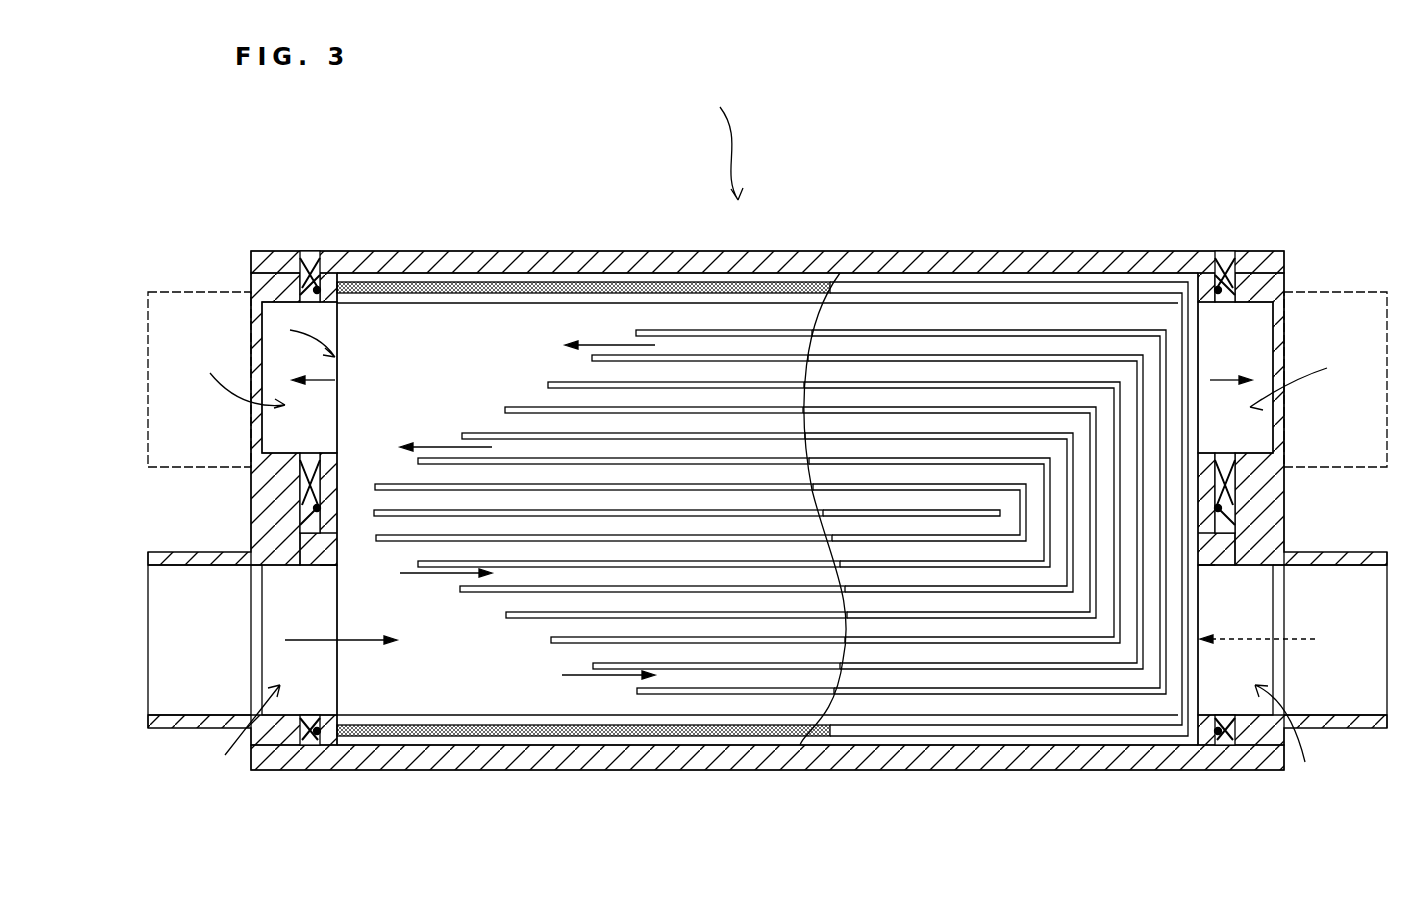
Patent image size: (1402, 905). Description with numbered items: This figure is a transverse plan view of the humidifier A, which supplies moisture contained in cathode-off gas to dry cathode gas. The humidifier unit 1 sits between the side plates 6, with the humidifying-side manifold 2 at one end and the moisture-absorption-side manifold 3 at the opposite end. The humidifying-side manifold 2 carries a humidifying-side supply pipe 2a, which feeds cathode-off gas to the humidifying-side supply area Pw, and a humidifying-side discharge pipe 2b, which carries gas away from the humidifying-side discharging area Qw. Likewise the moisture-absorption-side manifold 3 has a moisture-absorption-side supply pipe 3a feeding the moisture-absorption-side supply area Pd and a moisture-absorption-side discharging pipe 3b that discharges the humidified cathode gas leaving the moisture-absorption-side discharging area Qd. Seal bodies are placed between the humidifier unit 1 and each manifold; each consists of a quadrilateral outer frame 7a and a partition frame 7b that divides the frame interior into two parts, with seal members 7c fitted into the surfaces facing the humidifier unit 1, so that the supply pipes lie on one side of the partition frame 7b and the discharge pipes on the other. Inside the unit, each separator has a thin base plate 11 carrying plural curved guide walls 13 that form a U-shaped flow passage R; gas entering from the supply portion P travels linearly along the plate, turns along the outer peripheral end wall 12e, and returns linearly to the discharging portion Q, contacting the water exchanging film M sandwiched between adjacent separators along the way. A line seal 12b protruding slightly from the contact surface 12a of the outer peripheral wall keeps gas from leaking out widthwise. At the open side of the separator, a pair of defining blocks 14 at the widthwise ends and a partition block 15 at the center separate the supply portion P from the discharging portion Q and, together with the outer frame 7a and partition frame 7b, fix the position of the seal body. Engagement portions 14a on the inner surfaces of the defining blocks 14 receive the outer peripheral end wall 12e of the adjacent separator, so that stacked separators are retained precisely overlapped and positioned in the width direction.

The humidifier unit 1 is at (520, 262).
The humidifying-side manifold 2 is at (258, 537).
The humidifying-side supply pipe 2a is at (167, 732).
The humidifying-side discharge pipe 2b is at (172, 292).
The moisture-absorption-side manifold 3 is at (1283, 537).
The moisture-absorption-side supply pipe 3a is at (1370, 732).
The moisture-absorption-side discharging pipe 3b is at (1362, 292).
The side plates 6 is at (820, 250).
The outer frame 7a is at (292, 254).
The partition frame 7b is at (320, 490).
The seal member 7c is at (320, 285).
The base plate 11 is at (357, 670).
The contact surface 12a is at (710, 815).
The line seal 12b is at (427, 252).
The outer peripheral end wall 12e is at (1198, 355).
The guide walls 13 is at (518, 405).
The defining block 14 is at (771, 513).
The engagement portion 14a is at (345, 290).
The partition block 15 is at (330, 532).
The water exchanging film M is at (930, 313).
The humidifier A is at (721, 142).
The flow passage R is at (494, 641).
The supply portion P is at (325, 620).
The humidifying-side supply area Pw is at (240, 739).
The moisture-absorption-side supply area Pd is at (1266, 712).
The discharging portion Q is at (302, 337).
The humidifying-side discharging area Qw is at (264, 378).
The moisture-absorption-side discharging area Qd is at (1274, 379).